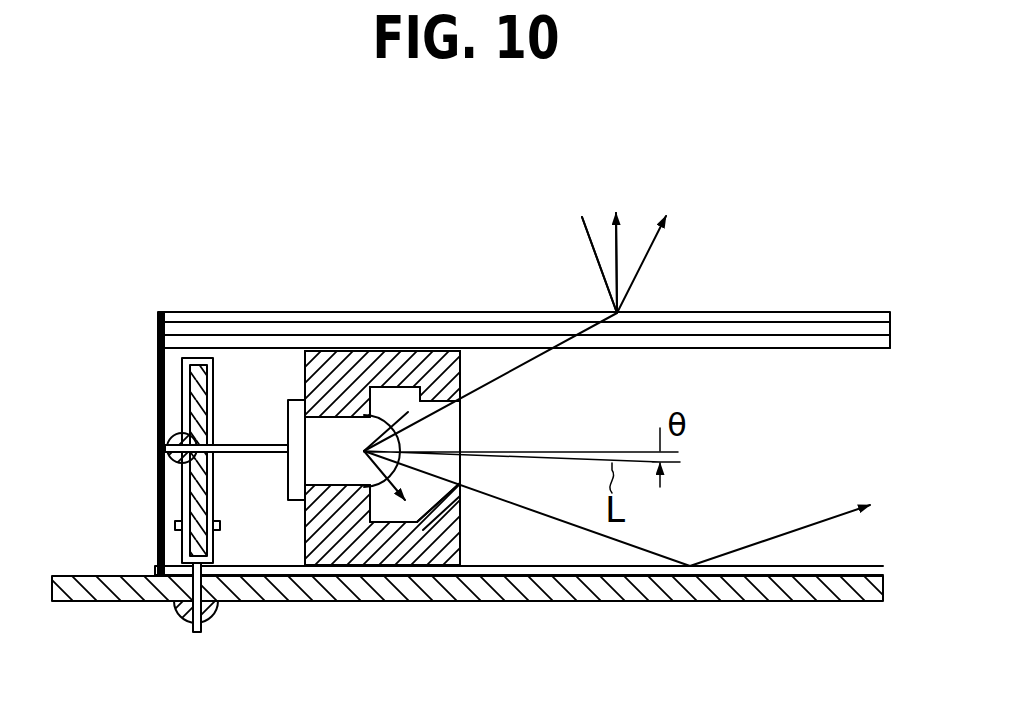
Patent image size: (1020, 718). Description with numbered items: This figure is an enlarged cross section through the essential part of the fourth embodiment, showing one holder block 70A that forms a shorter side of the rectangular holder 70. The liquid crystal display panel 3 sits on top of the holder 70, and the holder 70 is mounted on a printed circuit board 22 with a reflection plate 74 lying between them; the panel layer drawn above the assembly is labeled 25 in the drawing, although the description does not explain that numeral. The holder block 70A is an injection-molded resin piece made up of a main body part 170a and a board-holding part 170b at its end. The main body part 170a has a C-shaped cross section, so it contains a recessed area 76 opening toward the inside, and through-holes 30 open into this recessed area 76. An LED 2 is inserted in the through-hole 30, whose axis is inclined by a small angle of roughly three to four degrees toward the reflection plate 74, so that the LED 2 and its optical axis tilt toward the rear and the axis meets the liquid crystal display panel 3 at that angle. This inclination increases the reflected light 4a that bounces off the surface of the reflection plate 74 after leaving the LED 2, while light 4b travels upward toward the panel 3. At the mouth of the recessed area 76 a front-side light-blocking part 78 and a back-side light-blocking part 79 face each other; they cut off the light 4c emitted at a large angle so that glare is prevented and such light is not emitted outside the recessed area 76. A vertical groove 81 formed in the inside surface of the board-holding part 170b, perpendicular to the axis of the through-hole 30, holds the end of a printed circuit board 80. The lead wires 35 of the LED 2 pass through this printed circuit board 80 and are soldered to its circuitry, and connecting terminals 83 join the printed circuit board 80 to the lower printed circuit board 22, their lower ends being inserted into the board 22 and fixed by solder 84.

The liquid crystal display panel 3 is at (158, 324).
The housing top wall 25 is at (160, 338).
The holder 70 is at (464, 492).
The holder block 70A is at (296, 366).
The main body part 170a is at (427, 357).
The board-holding part 170b is at (170, 497).
The recessed area 76 is at (390, 390).
The front-side light-blocking part 78 is at (437, 396).
The back-side light-blocking part 79 is at (462, 487).
The through-hole 30 is at (334, 482).
The light with large emission angle 4c is at (359, 402).
The upward light beam 4b is at (550, 366).
The reflected light 4a is at (597, 537).
The LED 2 is at (325, 437).
The lead wire 35 is at (248, 455).
The printed circuit board 80 is at (188, 392).
The vertical groove 81 is at (196, 357).
The connecting terminal 83 is at (202, 632).
The solder 84 is at (180, 613).
The printed circuit board 22 is at (97, 602).
The reflection plate 74 is at (530, 563).